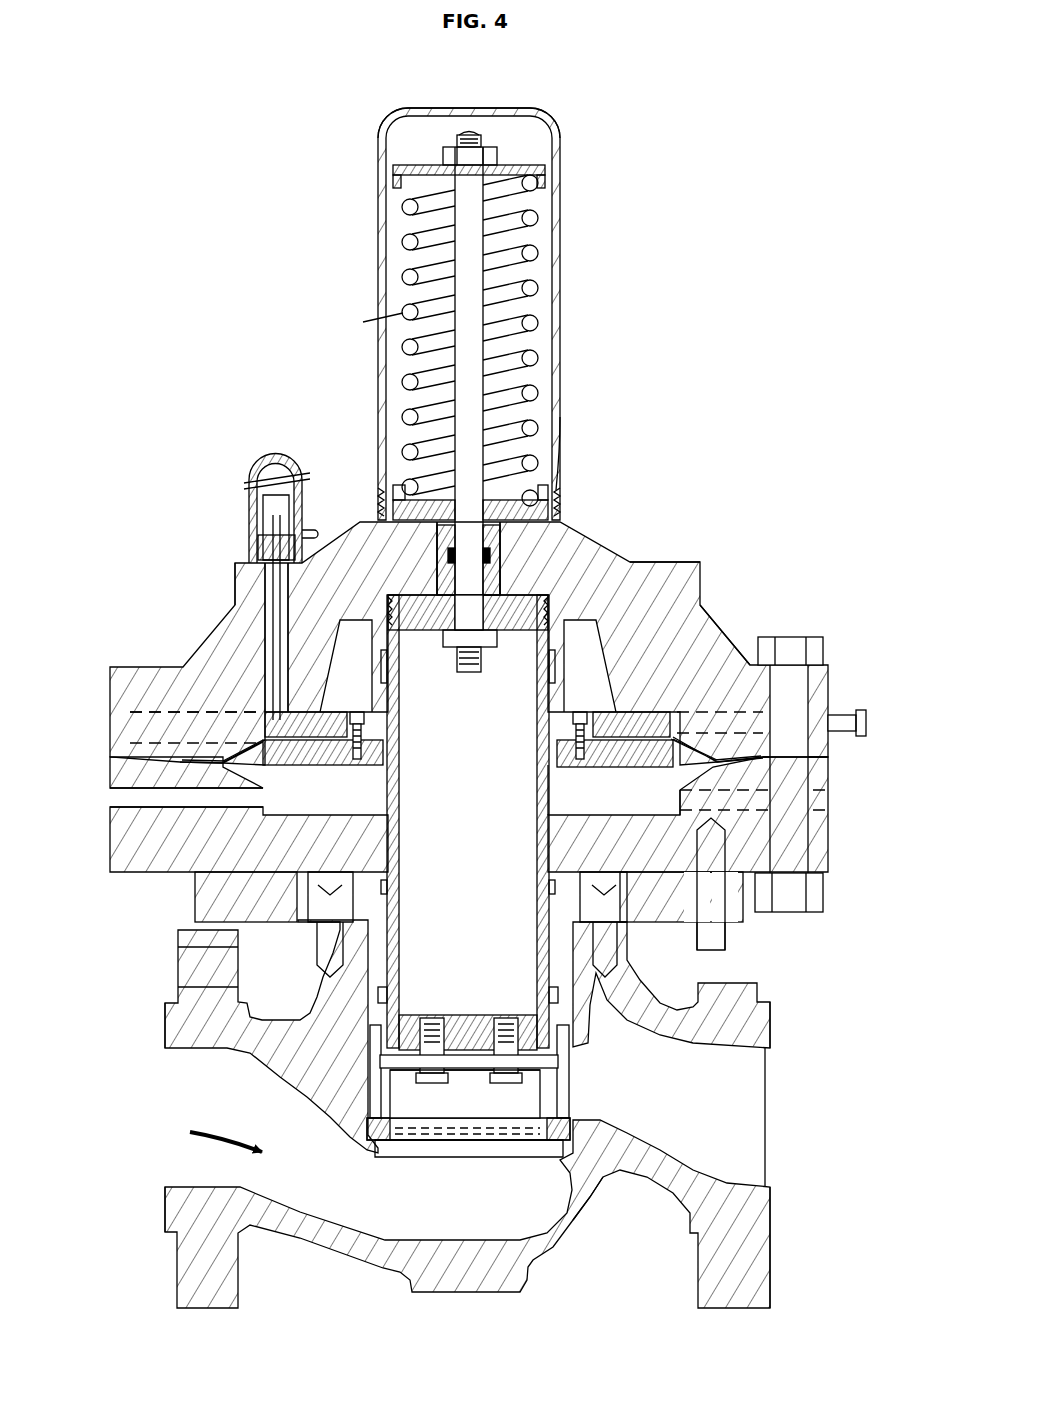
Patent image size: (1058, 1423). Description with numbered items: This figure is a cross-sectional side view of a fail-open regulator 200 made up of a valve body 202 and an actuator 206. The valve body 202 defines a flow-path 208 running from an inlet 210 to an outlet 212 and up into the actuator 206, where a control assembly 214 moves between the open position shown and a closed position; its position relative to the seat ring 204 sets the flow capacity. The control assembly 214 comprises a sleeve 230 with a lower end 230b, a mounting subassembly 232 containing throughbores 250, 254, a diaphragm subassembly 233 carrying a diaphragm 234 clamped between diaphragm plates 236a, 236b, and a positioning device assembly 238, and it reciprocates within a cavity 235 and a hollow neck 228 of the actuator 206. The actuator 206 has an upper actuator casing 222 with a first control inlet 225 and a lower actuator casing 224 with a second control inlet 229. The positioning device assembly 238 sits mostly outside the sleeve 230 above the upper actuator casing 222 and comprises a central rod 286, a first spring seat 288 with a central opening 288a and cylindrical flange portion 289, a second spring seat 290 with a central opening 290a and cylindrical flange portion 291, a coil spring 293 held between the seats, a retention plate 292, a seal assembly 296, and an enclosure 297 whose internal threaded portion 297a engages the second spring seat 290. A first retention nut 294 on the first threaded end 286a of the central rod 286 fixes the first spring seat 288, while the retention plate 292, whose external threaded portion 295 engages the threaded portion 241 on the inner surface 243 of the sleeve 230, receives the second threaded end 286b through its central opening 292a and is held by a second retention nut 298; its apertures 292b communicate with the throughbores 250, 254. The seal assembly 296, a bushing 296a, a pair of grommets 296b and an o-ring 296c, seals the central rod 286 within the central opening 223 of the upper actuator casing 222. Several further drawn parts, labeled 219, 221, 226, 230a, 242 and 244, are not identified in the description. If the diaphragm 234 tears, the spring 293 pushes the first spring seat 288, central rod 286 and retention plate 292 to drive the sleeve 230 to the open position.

The regulator 200 is at (668, 215).
The valve body 202 is at (768, 1306).
The seat ring 204 is at (578, 1200).
The actuator 206 is at (720, 612).
The flow-path 208 is at (205, 1144).
The inlet 210 is at (178, 1175).
The outlet 212 is at (770, 1170).
The control assembly 214 is at (360, 850).
The housing flange 219 is at (800, 778).
The nut 221 is at (823, 893).
The upper actuator casing 222 is at (823, 672).
The central opening 223 is at (515, 528).
The lower actuator casing 224 is at (726, 860).
The first control inlet 225 is at (110, 755).
The cage 226 is at (569, 1088).
The hollow neck 228 is at (552, 963).
The second control inlet 229 is at (112, 797).
The sleeve 230 is at (297, 876).
The diaphragm first portion 230a is at (255, 750).
The lower end 230b is at (380, 1000).
The mounting subassembly 232 is at (546, 1088).
The diaphragm subassembly 233 is at (613, 705).
The diaphragm 234 is at (800, 763).
The cavity 235 is at (592, 799).
The diaphragm plate 236a is at (303, 738).
The lower diaphragm plate 236b is at (357, 760).
The positioning device assembly 238 is at (566, 306).
The threaded portion 241 is at (300, 632).
The cap screw 242 is at (400, 1043).
The inner surface 243 is at (538, 800).
The plug plate 244 is at (400, 1075).
The throughbore 250 is at (465, 1076).
The throughbore 254 is at (540, 1147).
The central rod 286 is at (460, 253).
The first threaded end 286a is at (456, 134).
The second threaded end 286b is at (478, 673).
The first spring seat 288 is at (546, 170).
The central opening 288a is at (482, 140).
The cylindrical flange portion 289 is at (546, 185).
The second spring seat 290 is at (512, 497).
The central opening 290a is at (455, 470).
The cylindrical flange portion 291 is at (541, 490).
The retention plate 292 is at (540, 612).
The central opening 292a is at (470, 560).
The apertures 292b is at (505, 575).
The spring 293 is at (461, 400).
The first retention nut 294 is at (443, 156).
The external threaded portion 295 is at (640, 585).
The seal assembly 296 is at (532, 565).
The bushing 296a is at (265, 600).
The grommets 296b is at (273, 590).
The o-ring 296c is at (302, 465).
The enclosure 297 is at (455, 107).
The internal threaded portion 297a is at (378, 500).
The second retention nut 298 is at (447, 648).